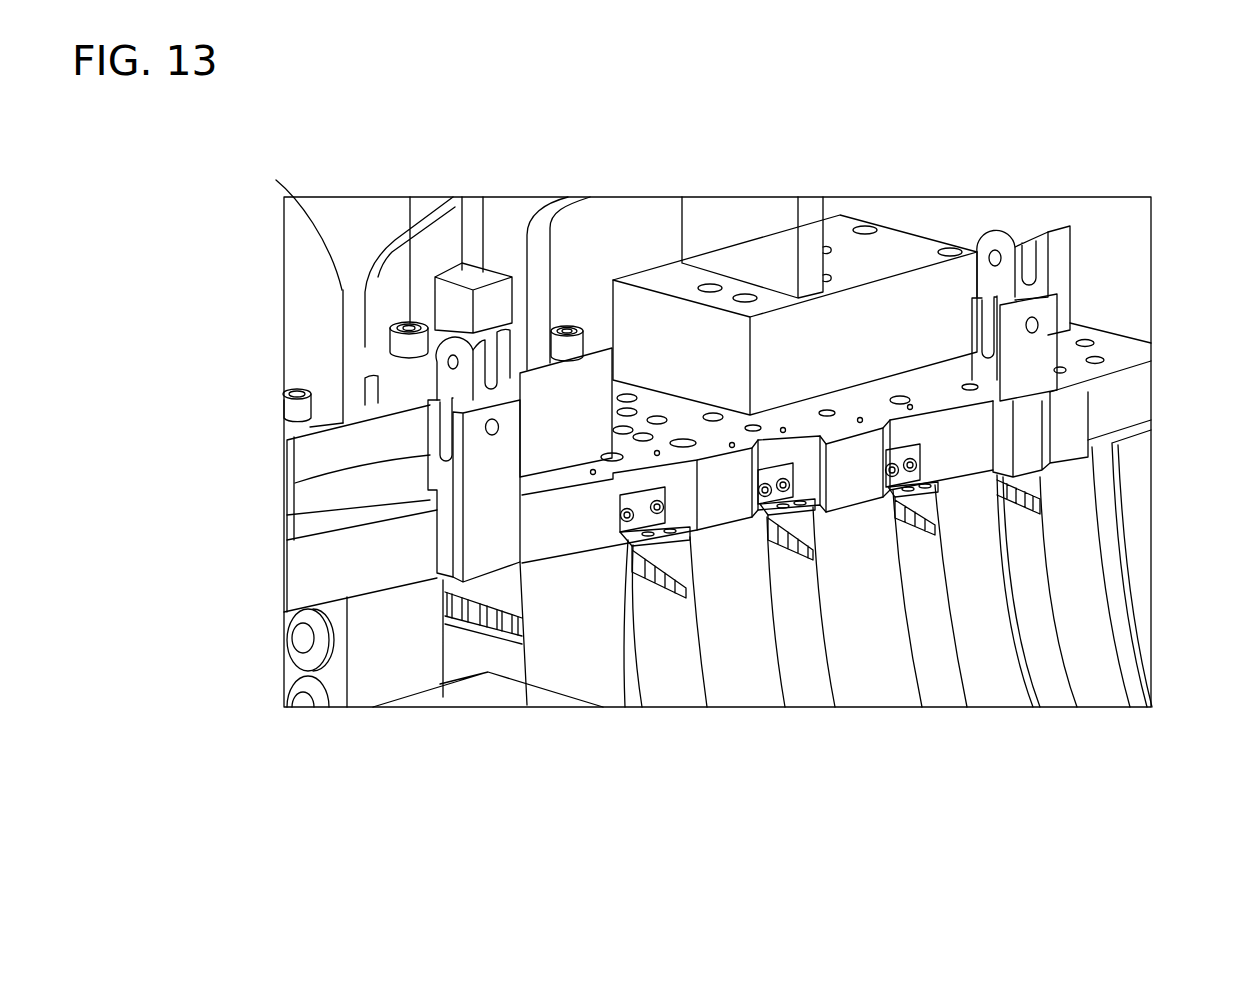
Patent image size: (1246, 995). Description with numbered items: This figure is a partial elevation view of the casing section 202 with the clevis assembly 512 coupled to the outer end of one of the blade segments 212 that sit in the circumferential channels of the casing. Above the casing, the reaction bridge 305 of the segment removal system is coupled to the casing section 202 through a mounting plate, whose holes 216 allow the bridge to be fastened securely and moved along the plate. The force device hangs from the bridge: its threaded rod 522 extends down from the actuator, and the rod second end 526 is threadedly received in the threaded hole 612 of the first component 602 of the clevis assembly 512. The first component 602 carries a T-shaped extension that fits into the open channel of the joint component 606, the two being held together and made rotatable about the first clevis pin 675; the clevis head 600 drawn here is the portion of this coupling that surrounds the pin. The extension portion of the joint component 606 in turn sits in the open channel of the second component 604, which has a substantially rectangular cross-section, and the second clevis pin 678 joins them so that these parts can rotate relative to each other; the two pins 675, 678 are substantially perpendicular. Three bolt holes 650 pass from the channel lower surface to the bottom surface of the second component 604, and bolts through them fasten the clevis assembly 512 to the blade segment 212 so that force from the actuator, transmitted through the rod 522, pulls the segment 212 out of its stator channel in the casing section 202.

The casing section 202 is at (506, 732).
The blade segments 212 is at (510, 662).
The holes 216 is at (1142, 382).
The reaction bridge 305 is at (318, 274).
The clevis assembly 512 is at (531, 413).
The threaded rod 522 is at (475, 200).
The second end 526 is at (490, 230).
The clevis 600 is at (406, 387).
The first component 602 is at (447, 290).
The second component 604 is at (433, 477).
The joint component 606 is at (442, 386).
The threaded hole 612 is at (508, 263).
The bolt holes 650 is at (493, 626).
The first clevis pin 675 is at (292, 222).
The second clevis pin 678 is at (497, 430).